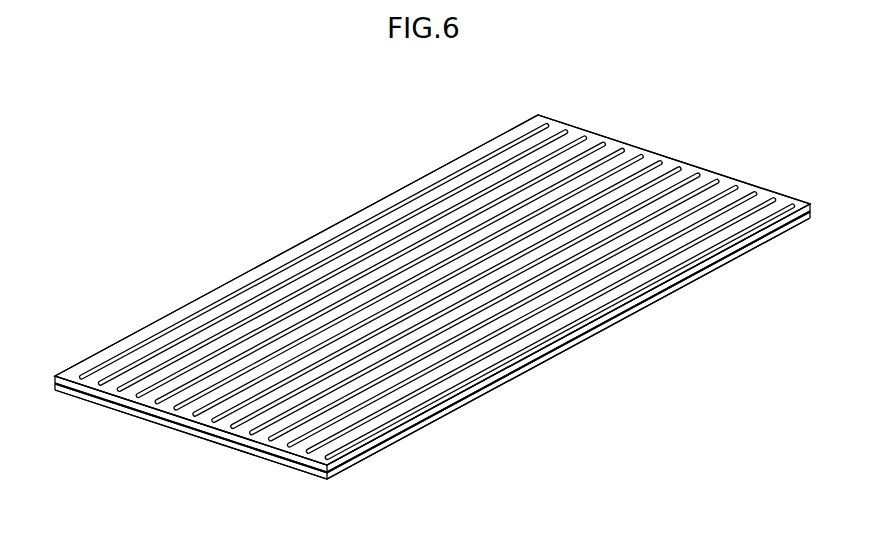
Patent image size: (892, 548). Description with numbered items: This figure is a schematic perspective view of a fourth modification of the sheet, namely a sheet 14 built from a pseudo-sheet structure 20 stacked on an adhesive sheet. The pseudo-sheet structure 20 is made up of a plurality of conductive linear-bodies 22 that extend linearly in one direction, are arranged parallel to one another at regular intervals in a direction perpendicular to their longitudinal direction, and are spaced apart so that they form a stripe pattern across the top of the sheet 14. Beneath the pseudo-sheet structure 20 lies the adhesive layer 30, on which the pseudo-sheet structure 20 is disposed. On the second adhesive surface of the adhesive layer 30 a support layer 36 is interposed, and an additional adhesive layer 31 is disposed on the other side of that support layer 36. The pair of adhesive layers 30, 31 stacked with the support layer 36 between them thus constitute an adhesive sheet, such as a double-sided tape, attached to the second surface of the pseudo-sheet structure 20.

The sheet 14 is at (160, 287).
The pseudo-sheet structure 20 is at (510, 358).
The conductive linear-bodies 22 is at (250, 433).
The adhesive layer 30 is at (362, 452).
The additional adhesive layer 31 is at (480, 399).
The support layer 36 is at (422, 425).